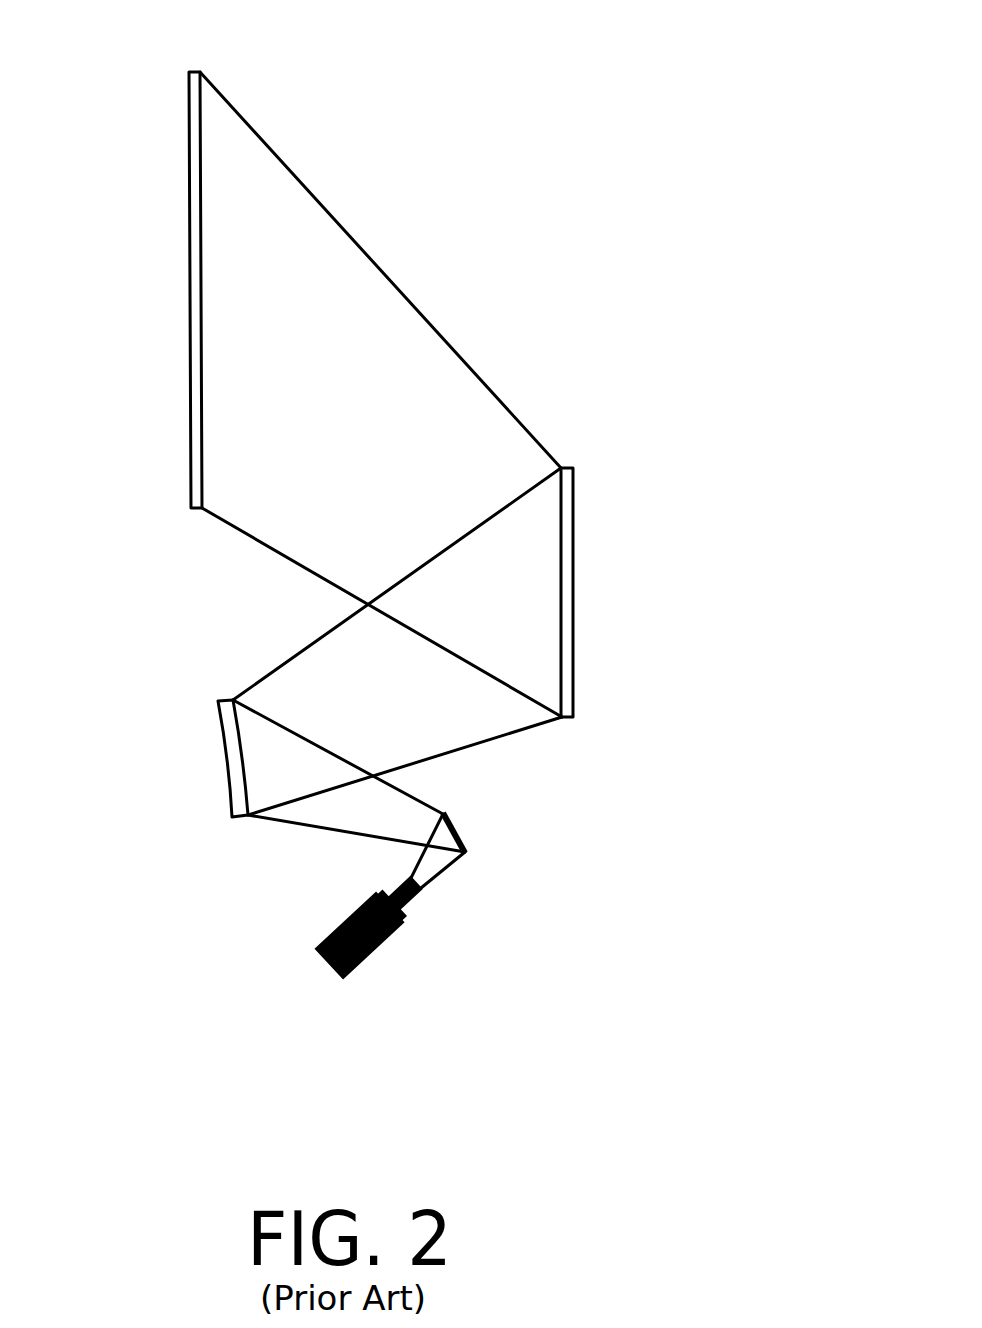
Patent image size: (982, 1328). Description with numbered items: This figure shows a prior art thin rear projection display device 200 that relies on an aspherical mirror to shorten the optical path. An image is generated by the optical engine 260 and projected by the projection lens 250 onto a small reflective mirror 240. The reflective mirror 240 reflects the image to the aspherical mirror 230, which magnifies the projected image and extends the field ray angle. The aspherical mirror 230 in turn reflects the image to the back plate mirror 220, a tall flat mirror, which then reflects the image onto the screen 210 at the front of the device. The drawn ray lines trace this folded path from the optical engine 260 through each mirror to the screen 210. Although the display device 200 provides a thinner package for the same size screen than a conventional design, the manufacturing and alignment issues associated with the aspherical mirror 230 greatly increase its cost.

The rear projection display device 200 is at (722, 66).
The screen 210 is at (171, 167).
The back plate mirror 220 is at (587, 458).
The aspherical mirror 230 is at (202, 766).
The reflective mirror 240 is at (482, 822).
The projection lens 250 is at (357, 874).
The optical engine 260 is at (320, 976).